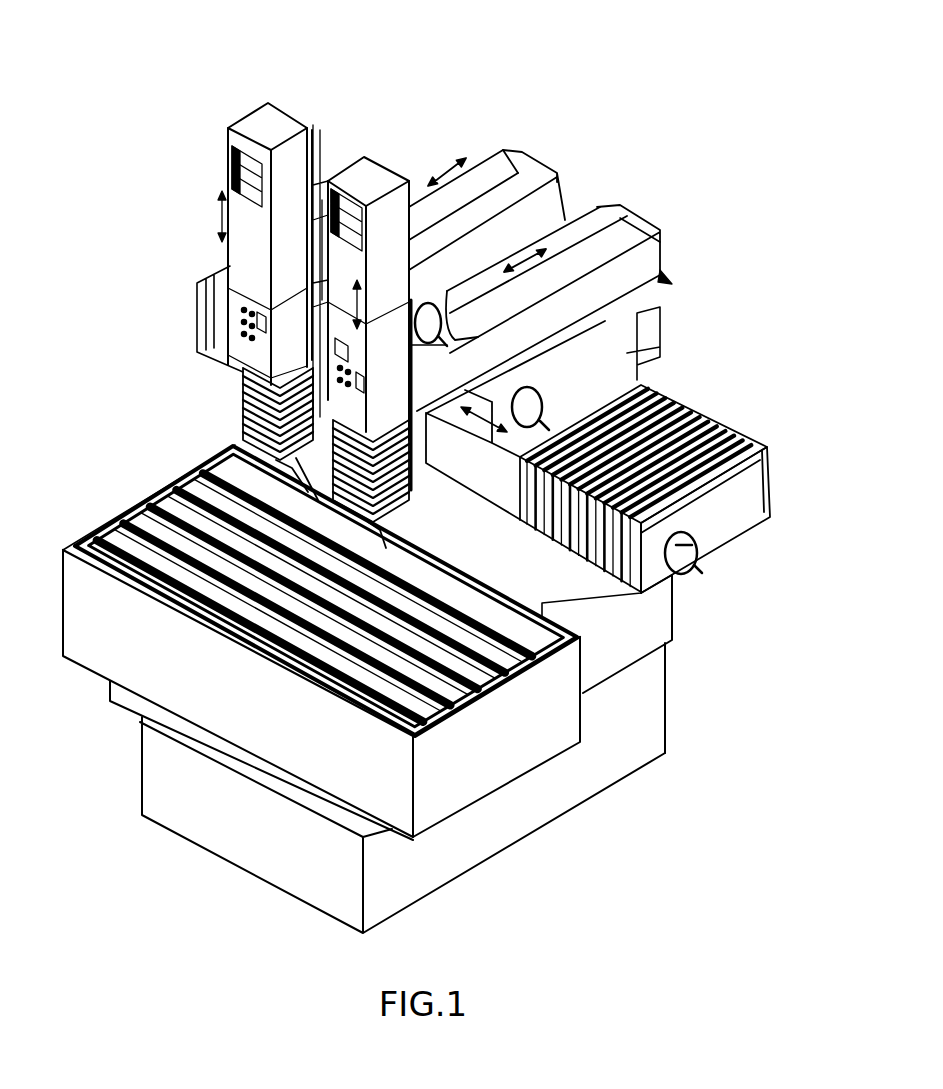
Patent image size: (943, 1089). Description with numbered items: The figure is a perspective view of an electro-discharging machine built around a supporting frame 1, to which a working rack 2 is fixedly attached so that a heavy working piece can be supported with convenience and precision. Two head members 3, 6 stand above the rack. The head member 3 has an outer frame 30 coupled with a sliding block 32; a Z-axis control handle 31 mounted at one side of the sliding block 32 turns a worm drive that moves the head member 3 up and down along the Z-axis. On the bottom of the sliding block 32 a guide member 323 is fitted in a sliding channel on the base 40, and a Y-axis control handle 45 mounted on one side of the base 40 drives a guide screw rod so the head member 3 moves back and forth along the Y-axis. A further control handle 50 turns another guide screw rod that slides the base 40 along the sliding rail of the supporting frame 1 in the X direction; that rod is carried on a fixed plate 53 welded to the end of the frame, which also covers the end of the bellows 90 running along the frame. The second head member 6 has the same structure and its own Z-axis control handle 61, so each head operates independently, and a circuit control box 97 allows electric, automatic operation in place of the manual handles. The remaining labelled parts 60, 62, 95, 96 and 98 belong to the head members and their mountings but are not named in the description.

The supporting frame 1 is at (657, 624).
The working rack 2 is at (197, 503).
The head member 3 is at (362, 160).
The head member 6 is at (234, 110).
The outer frame 30 is at (390, 222).
The control handle 31 is at (478, 337).
The sliding block 32 is at (633, 230).
The guide member 323 is at (663, 277).
The base 40 is at (637, 353).
The control handle 45 is at (545, 396).
The control handle 50 is at (698, 553).
The fixed plate 53 is at (743, 498).
The bracket 60 is at (250, 265).
The Z-axis control handle 61 is at (313, 190).
The beam end cap 62 is at (530, 175).
The bellows 90 is at (700, 418).
The connecting plate 95 is at (330, 200).
The display panel 96 is at (240, 172).
The circuit control box 97 is at (232, 369).
The operation panel 98 is at (232, 316).